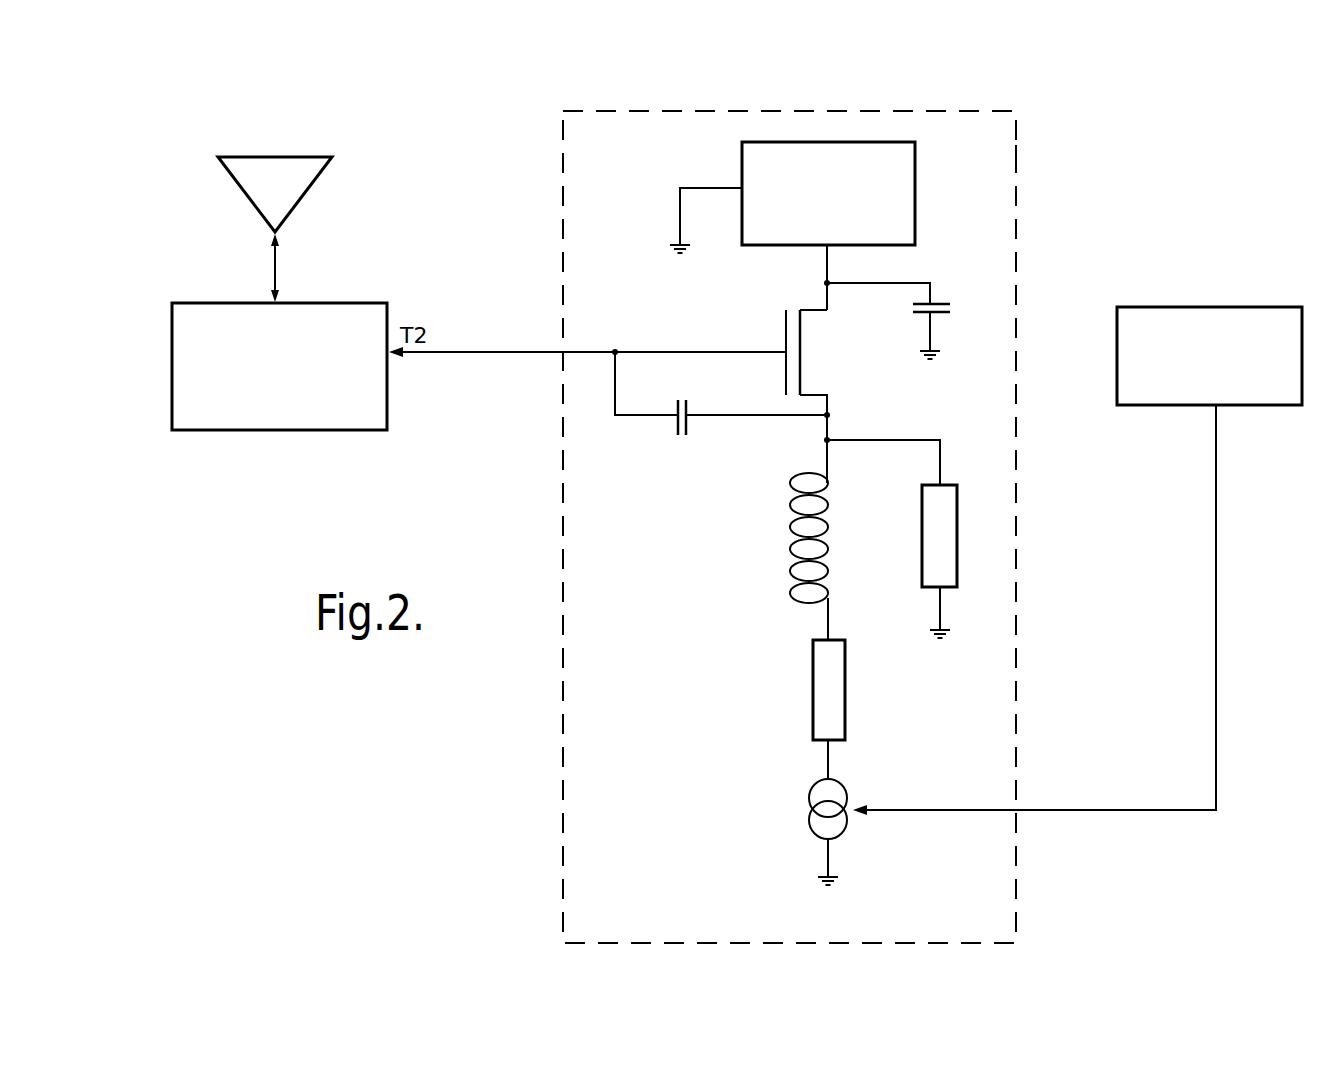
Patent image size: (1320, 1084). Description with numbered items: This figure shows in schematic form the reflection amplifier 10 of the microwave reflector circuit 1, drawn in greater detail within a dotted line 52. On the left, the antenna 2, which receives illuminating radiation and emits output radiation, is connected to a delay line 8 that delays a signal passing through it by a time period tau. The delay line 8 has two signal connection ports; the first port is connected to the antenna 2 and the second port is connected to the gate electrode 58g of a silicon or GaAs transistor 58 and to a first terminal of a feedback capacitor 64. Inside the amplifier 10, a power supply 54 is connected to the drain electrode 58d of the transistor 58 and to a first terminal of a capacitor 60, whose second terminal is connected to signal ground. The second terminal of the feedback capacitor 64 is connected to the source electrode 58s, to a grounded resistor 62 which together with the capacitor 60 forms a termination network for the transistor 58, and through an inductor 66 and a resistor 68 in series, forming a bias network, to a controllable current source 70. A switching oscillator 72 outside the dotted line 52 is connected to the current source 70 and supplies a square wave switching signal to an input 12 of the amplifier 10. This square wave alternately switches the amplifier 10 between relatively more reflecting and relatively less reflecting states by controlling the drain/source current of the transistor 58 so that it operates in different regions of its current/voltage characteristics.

The reflector circuit 1 is at (521, 151).
The antenna 2 is at (263, 175).
The delay line 8 is at (213, 412).
The reflection amplifier 10 is at (998, 126).
The input 12 is at (1018, 812).
The dotted line 52 is at (1018, 158).
The power supply 54 is at (825, 197).
The transistor 58 is at (775, 302).
The drain electrode 58d is at (861, 317).
The gate electrode 58g is at (759, 370).
The source electrode 58s is at (856, 384).
The capacitor 60 is at (936, 305).
The resistor 62 is at (940, 548).
The feedback capacitor 64 is at (678, 425).
The inductor 66 is at (790, 548).
The resistor 68 is at (820, 690).
The controllable current source 70 is at (812, 812).
The switching oscillator 72 is at (1150, 307).